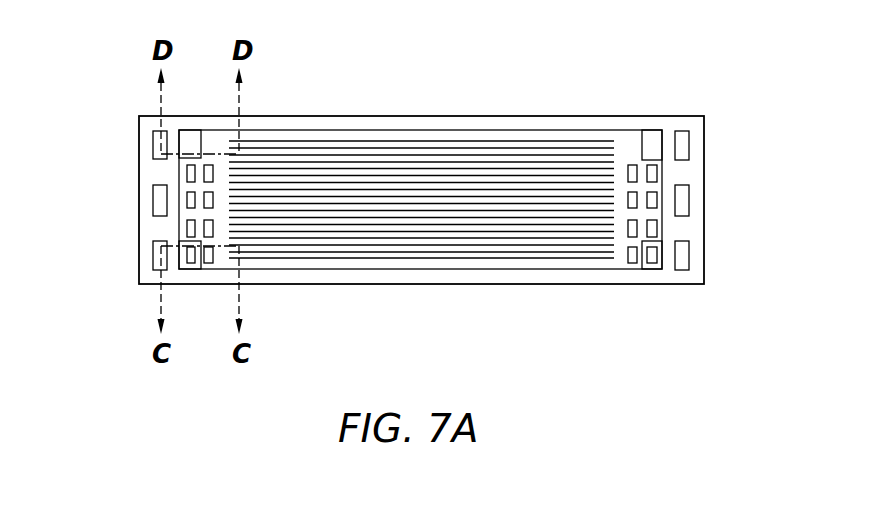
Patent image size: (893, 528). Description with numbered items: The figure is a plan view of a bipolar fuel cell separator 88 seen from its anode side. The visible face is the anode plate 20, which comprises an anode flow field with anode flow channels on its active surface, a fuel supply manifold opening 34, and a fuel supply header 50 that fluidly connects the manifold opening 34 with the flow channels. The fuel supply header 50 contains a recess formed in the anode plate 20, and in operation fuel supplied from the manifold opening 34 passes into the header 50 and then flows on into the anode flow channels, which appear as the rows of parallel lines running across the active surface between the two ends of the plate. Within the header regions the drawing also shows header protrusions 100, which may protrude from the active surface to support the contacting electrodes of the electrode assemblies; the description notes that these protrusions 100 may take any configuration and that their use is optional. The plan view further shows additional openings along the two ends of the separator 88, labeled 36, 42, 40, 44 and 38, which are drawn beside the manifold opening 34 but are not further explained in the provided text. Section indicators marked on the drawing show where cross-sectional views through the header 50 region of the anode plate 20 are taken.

The bipolar fuel cell separator 88 is at (724, 80).
The anode plate 20 is at (603, 127).
The side pad 36 is at (155, 148).
The side pad 42 is at (155, 198).
The fuel supply manifold opening 34 is at (155, 250).
The side pad 40 is at (684, 141).
The side pad 44 is at (684, 198).
The side pad 38 is at (685, 256).
The fuel supply header 50 is at (219, 112).
The header protrusions 100 is at (627, 227).